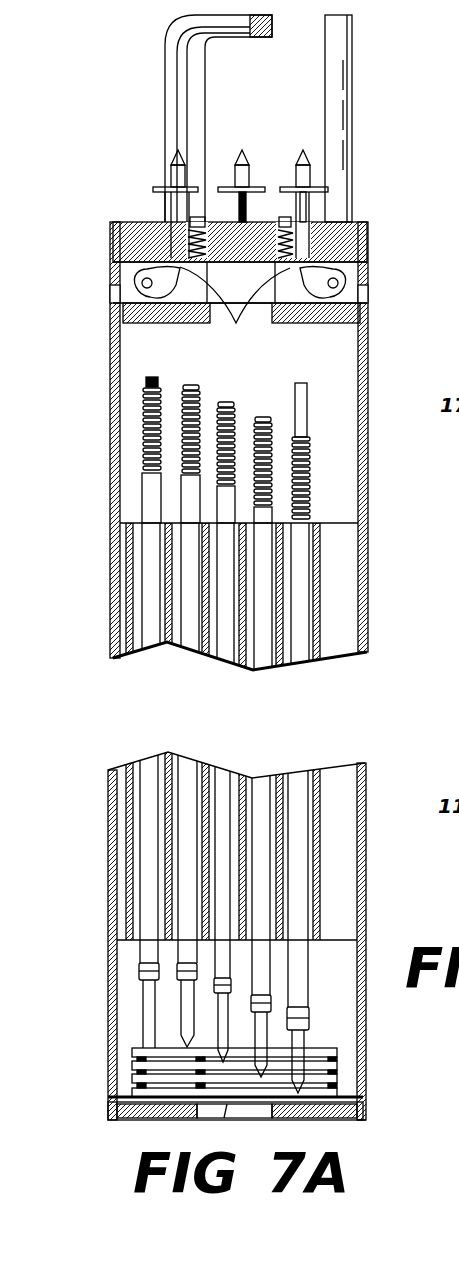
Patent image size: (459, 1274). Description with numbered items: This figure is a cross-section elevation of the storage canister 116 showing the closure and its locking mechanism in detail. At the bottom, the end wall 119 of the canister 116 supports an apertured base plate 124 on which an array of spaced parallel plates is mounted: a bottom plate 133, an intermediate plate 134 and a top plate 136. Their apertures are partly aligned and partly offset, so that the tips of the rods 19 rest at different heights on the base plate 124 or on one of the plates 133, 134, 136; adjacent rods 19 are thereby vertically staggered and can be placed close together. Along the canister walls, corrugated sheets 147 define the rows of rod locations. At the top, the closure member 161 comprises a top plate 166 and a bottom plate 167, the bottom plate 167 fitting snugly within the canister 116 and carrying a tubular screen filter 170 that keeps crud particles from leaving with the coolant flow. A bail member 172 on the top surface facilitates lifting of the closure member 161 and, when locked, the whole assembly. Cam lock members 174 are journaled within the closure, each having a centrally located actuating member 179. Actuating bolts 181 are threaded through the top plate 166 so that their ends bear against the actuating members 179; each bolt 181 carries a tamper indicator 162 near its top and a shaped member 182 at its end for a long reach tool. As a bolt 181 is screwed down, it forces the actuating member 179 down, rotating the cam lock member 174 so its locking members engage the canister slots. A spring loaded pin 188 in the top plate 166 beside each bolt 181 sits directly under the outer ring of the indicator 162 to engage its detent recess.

The rods 19 is at (300, 500).
The storage canister 116 is at (108, 838).
The end wall 119 is at (330, 1122).
The apertured base plate 124 is at (227, 1107).
The bottom plate 133 is at (130, 1088).
The intermediate plate 134 is at (130, 1075).
The top plate 136 is at (130, 1056).
The first corrugated sheet 147 is at (130, 867).
The closure member 161 is at (365, 222).
The tamper indicator 162 is at (153, 186).
The top plate 166 is at (112, 225).
The bottom plate 167 is at (138, 327).
The tubular screen filter 170 is at (262, 308).
The bail member 172 is at (178, 20).
The cam lock member 174 is at (178, 323).
The actuating member 179 is at (236, 323).
The actuating bolt 181 is at (242, 205).
The shaped member 182 is at (178, 165).
The spring loaded pin 188 is at (187, 230).